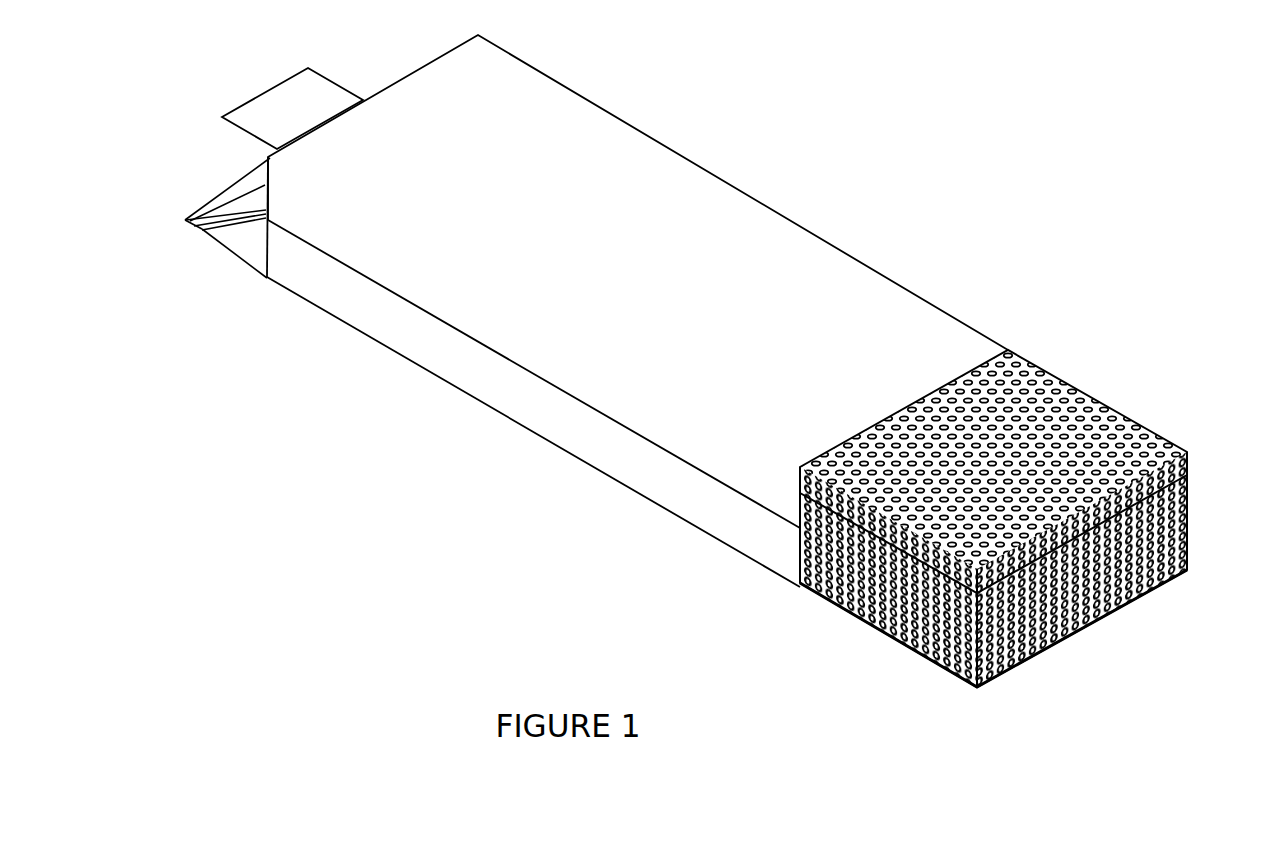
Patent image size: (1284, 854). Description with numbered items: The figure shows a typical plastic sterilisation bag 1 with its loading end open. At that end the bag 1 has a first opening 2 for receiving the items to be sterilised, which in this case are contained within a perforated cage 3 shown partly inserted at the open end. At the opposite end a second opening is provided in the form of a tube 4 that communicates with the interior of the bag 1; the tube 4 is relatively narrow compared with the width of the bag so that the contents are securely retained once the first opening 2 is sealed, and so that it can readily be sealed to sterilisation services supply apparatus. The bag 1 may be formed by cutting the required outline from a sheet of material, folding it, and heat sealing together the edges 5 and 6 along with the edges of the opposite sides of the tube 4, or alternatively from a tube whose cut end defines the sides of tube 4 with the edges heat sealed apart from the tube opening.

The bag 1 is at (667, 172).
The first opening 2 is at (1008, 350).
The perforated cage 3 is at (1115, 393).
The tube 4 is at (275, 98).
The edge 5 is at (553, 390).
The edge 6 is at (203, 212).